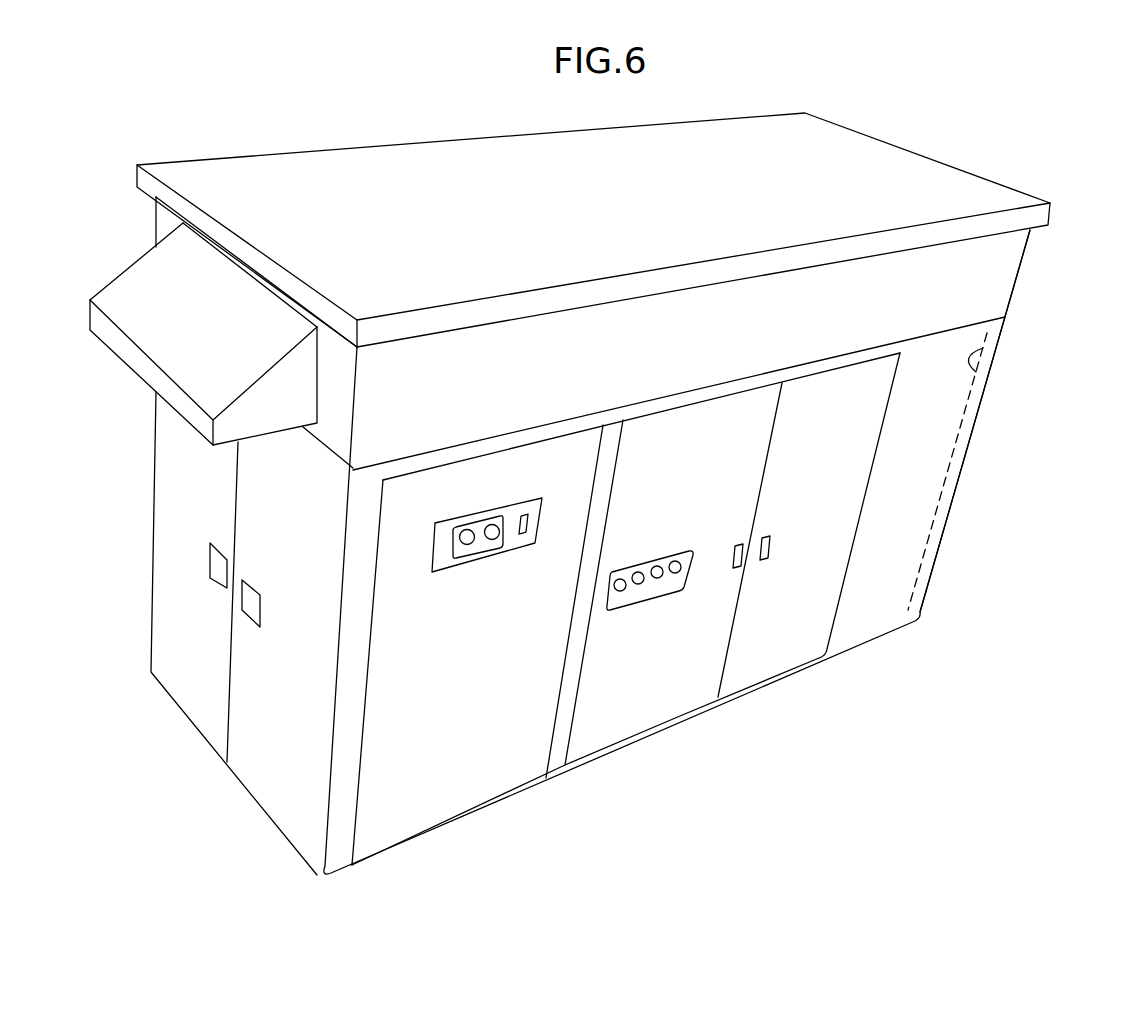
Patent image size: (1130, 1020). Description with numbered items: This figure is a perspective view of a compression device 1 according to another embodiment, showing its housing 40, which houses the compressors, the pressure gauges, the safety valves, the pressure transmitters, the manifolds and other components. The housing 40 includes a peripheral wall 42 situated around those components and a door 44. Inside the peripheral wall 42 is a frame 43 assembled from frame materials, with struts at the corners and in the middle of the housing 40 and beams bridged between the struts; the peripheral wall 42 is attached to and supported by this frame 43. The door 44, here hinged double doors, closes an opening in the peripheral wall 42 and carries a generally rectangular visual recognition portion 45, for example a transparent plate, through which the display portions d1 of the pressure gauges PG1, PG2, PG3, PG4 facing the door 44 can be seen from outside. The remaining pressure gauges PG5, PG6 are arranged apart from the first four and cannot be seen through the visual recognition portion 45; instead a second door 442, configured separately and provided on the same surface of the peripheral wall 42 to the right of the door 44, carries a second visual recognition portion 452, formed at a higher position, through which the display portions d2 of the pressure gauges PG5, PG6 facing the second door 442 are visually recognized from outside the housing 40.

The apparatus 1 is at (941, 143).
The housing 40 is at (1023, 267).
The peripheral wall 42 is at (953, 408).
The frame 43 is at (978, 351).
The door 44 is at (728, 453).
The visual recognition portion 45 is at (668, 550).
The second door 442 is at (485, 555).
The second visual recognition portion 452 is at (480, 513).
The display portions d1 is at (636, 572).
The display portions d2 is at (487, 516).
The pressure gauge PG1 is at (620, 592).
The pressure gauge PG2 is at (638, 590).
The pressure gauge PG3 is at (657, 585).
The pressure gauge PG4 is at (677, 580).
The pressure gauge PG5 is at (494, 541).
The pressure gauge PG6 is at (463, 545).